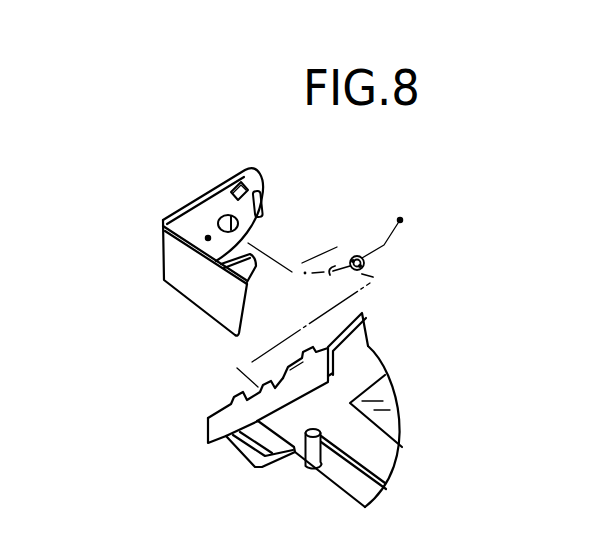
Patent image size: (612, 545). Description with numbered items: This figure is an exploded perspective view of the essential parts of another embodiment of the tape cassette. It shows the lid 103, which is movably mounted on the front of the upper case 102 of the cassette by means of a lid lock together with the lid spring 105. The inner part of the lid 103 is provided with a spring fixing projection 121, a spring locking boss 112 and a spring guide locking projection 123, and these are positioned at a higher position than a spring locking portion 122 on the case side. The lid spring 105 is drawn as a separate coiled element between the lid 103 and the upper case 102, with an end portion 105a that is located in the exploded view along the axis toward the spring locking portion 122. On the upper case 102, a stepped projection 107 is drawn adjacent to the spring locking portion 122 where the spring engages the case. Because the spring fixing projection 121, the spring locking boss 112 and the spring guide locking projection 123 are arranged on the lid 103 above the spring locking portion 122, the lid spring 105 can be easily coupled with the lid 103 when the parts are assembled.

The upper case 102 is at (383, 462).
The lid 103 is at (190, 290).
The lid spring 105 is at (396, 246).
The screw tip / attachment point 105a is at (400, 220).
The stepped projection 107 is at (313, 347).
The spring locking boss 112 is at (232, 192).
The spring fixing projection 121 is at (206, 238).
The spring locking portion 122 is at (330, 373).
The spring guide locking projection 123 is at (262, 197).